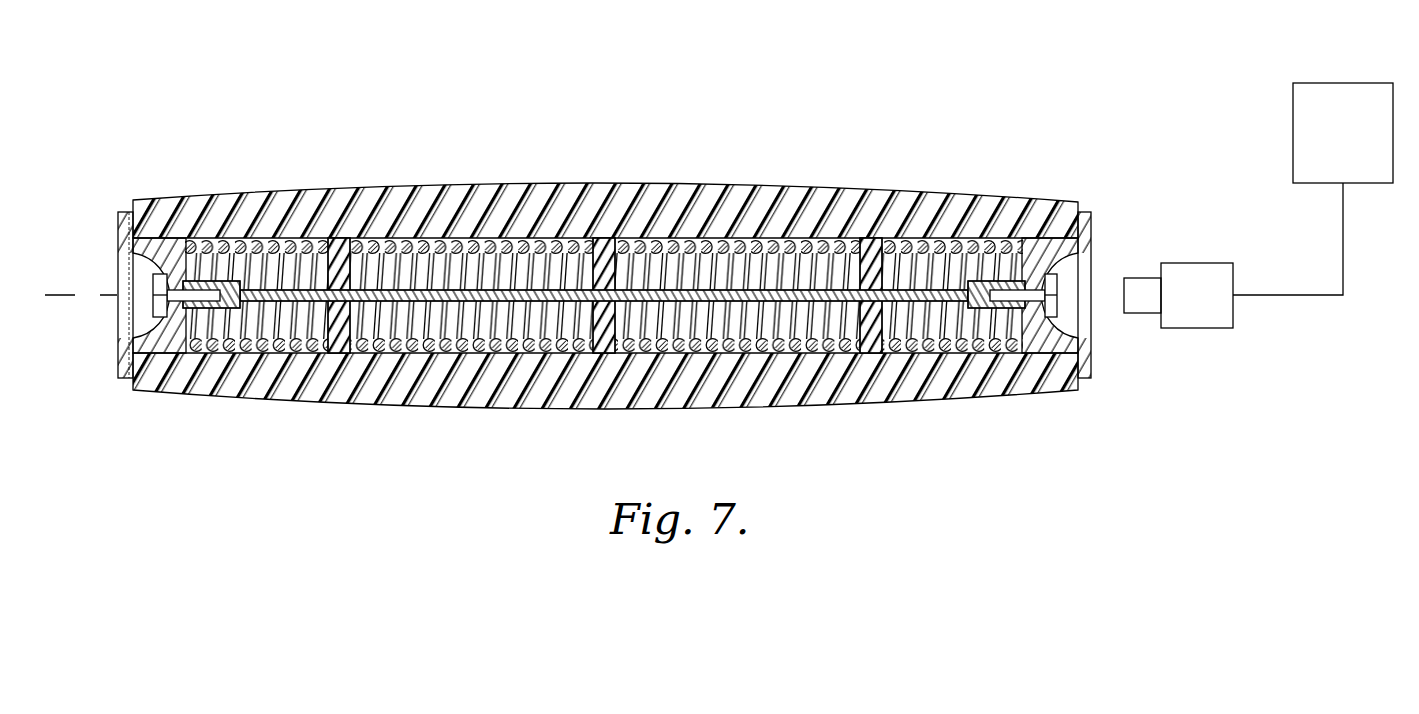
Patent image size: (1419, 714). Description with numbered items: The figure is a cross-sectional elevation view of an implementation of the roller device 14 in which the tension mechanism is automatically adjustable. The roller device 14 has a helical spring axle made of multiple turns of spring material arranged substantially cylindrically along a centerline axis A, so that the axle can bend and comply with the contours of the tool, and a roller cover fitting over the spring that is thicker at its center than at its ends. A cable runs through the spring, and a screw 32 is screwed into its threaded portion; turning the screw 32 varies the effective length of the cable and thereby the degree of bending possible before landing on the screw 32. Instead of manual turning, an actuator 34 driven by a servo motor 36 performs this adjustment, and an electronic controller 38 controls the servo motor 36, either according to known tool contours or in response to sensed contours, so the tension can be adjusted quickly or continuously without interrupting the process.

The roller device 14 is at (338, 158).
The screw 32 is at (1075, 318).
The actuator 34 is at (1138, 285).
The servo motor 36 is at (1207, 276).
The electronic controller 38 is at (1343, 133).
The centerline axis A is at (87, 297).